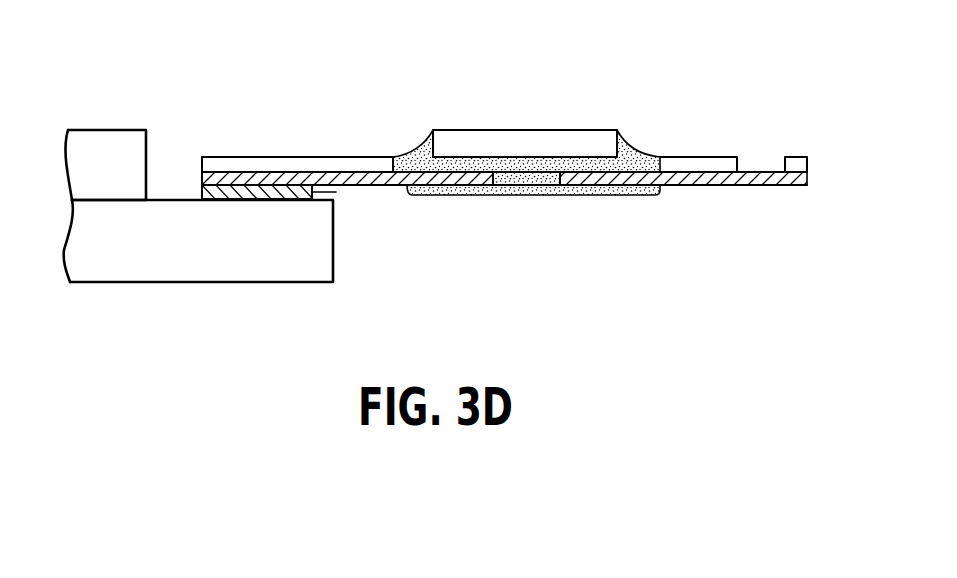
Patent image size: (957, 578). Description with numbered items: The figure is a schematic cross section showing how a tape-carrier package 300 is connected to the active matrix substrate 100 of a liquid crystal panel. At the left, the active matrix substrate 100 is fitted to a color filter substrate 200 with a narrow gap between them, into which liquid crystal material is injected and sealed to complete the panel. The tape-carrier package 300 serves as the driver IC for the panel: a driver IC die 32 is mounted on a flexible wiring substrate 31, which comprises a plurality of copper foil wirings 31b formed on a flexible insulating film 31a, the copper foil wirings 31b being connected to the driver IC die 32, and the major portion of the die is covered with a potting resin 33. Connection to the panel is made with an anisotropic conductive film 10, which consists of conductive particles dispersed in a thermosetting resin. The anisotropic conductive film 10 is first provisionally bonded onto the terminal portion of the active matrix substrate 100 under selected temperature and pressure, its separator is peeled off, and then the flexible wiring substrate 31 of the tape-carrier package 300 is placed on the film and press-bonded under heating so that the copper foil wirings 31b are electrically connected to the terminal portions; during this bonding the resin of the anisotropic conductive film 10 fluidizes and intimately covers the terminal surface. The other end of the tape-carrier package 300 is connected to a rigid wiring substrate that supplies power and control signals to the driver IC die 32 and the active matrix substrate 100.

The color filter substrate 200 is at (113, 120).
The active matrix substrate 100 is at (338, 253).
The flexible insulating film 31a is at (315, 163).
The flexible wiring substrate 31 is at (810, 157).
The copper foil wirings 31b is at (378, 186).
The anisotropic conductive film 10 is at (336, 192).
The tape-carrier package 300 is at (556, 150).
The driver IC die 32 is at (487, 138).
The sealing resin 33 is at (527, 186).